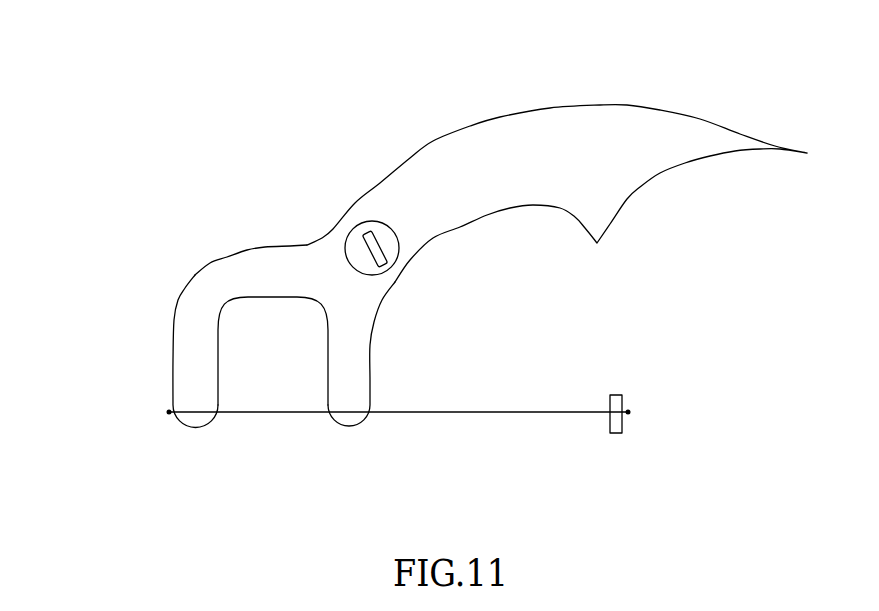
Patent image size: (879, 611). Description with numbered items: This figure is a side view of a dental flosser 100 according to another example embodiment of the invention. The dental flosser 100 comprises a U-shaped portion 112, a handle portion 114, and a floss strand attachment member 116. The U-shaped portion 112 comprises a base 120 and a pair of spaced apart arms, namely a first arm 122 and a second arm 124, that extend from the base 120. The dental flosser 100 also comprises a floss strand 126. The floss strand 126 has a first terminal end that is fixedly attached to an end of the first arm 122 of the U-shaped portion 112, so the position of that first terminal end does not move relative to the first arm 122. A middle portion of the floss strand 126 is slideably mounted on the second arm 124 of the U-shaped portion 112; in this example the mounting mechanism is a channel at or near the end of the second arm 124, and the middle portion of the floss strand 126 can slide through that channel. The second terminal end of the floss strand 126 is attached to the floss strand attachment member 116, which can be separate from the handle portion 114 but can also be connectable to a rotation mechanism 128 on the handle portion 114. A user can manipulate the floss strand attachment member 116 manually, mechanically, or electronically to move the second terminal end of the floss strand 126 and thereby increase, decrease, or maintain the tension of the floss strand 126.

The dental flosser 100 is at (177, 188).
The U-shaped portion 112 is at (190, 270).
The handle portion 114 is at (583, 110).
The floss strand attachment member 116 is at (623, 420).
The base 120 is at (225, 280).
The first arm 122 is at (190, 335).
The second arm 124 is at (330, 355).
The floss strand 126 is at (415, 415).
The rotation mechanism 128 is at (377, 218).